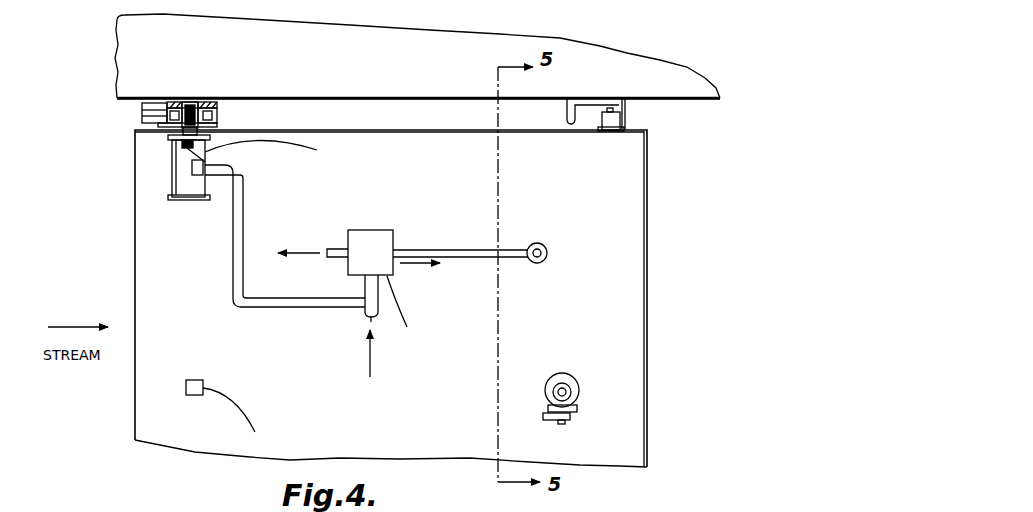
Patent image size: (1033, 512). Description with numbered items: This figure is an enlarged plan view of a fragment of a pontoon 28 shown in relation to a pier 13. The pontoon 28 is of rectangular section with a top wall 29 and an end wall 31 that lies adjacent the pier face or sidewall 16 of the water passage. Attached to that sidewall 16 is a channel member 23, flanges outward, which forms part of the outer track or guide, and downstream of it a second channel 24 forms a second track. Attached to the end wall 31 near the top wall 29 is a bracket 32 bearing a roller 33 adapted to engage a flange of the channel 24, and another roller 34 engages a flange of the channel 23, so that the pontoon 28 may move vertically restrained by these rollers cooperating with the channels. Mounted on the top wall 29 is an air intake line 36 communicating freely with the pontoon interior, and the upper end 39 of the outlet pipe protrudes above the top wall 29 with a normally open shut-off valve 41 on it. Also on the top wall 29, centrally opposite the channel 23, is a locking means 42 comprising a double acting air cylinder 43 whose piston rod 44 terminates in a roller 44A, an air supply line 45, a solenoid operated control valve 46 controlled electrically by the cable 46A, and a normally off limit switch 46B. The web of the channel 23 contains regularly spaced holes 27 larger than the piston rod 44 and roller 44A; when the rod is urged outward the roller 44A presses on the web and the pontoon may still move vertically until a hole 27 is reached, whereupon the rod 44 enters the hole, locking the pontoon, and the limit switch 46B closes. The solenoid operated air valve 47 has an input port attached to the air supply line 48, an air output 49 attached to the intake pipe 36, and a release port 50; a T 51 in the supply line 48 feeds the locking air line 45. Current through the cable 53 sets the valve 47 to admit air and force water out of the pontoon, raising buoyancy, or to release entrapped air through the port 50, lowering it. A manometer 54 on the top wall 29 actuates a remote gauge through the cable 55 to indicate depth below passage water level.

The pier 13 is at (113, 63).
The sidewall of passage 16 is at (326, 98).
The channel member 23 is at (162, 106).
The channel 24 is at (565, 108).
The holes 27 is at (195, 100).
The pontoon 28 is at (650, 230).
The top wall 29 is at (638, 277).
The end wall 31 is at (443, 133).
The bracket 32 is at (593, 125).
The roller 33 is at (613, 117).
The roller 34 is at (162, 113).
The air intake line 36 is at (548, 252).
The upper end of outlet pipe 39 is at (573, 390).
The shut-off valve 41 is at (557, 402).
The locking means 42 is at (172, 187).
The double acting air cylinder 43 is at (180, 162).
The piston rod 44 is at (213, 117).
The roller 44A is at (187, 98).
The air supply line 45 is at (243, 190).
The solenoid operated control valve 46 is at (197, 175).
The cable 46A is at (300, 150).
The limit switch 46B is at (173, 147).
The solenoid operated air valve 47 is at (375, 232).
The air supply line 48 is at (365, 313).
The air output 49 is at (418, 248).
The release port 50 is at (335, 250).
The T 51 is at (367, 300).
The cable 53 is at (407, 327).
The manometer 54 is at (195, 380).
The cable 55 is at (232, 398).